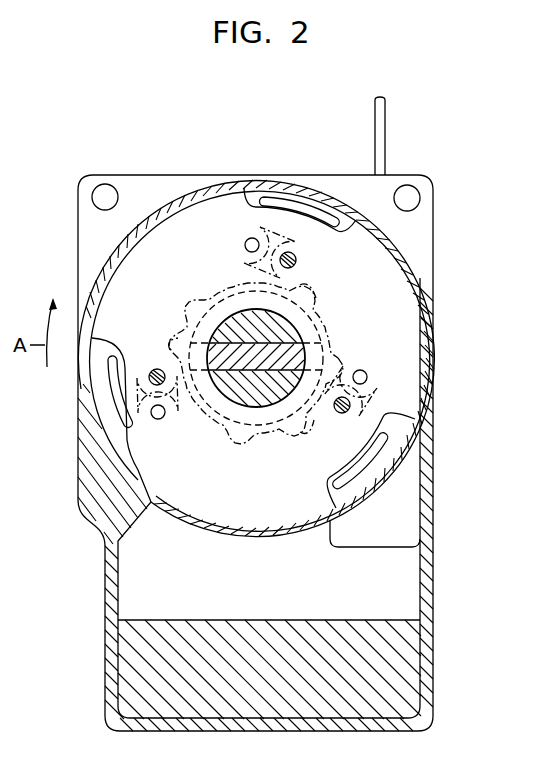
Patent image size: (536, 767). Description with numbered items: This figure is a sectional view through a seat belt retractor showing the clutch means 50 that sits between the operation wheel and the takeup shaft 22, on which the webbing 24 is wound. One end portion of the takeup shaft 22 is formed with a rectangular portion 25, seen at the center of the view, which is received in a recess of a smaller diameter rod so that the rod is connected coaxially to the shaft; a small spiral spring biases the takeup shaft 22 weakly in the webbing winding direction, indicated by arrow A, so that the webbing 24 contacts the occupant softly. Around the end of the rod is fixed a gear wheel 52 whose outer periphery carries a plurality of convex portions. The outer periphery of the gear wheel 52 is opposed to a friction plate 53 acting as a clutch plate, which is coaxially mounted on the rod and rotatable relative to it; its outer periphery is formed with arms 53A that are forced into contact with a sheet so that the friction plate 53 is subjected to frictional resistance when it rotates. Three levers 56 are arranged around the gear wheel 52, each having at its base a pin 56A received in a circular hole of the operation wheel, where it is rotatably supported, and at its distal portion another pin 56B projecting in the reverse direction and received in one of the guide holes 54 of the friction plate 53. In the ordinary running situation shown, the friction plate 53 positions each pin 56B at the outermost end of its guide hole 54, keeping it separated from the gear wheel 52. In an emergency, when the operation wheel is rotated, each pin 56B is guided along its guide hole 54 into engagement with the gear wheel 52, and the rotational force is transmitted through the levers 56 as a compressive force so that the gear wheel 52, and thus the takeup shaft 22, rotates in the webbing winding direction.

The takeup shaft 22 is at (183, 308).
The webbing 24 is at (382, 123).
The rectangular portion 25 is at (228, 350).
The clutch means 50 is at (222, 208).
The gear wheel 52 is at (337, 302).
The friction plate 53 is at (112, 251).
The arms 53A is at (284, 197).
The guide holes 54 is at (310, 283).
The levers 56 is at (237, 224).
The pin 56A is at (245, 247).
The pin 56B is at (294, 256).